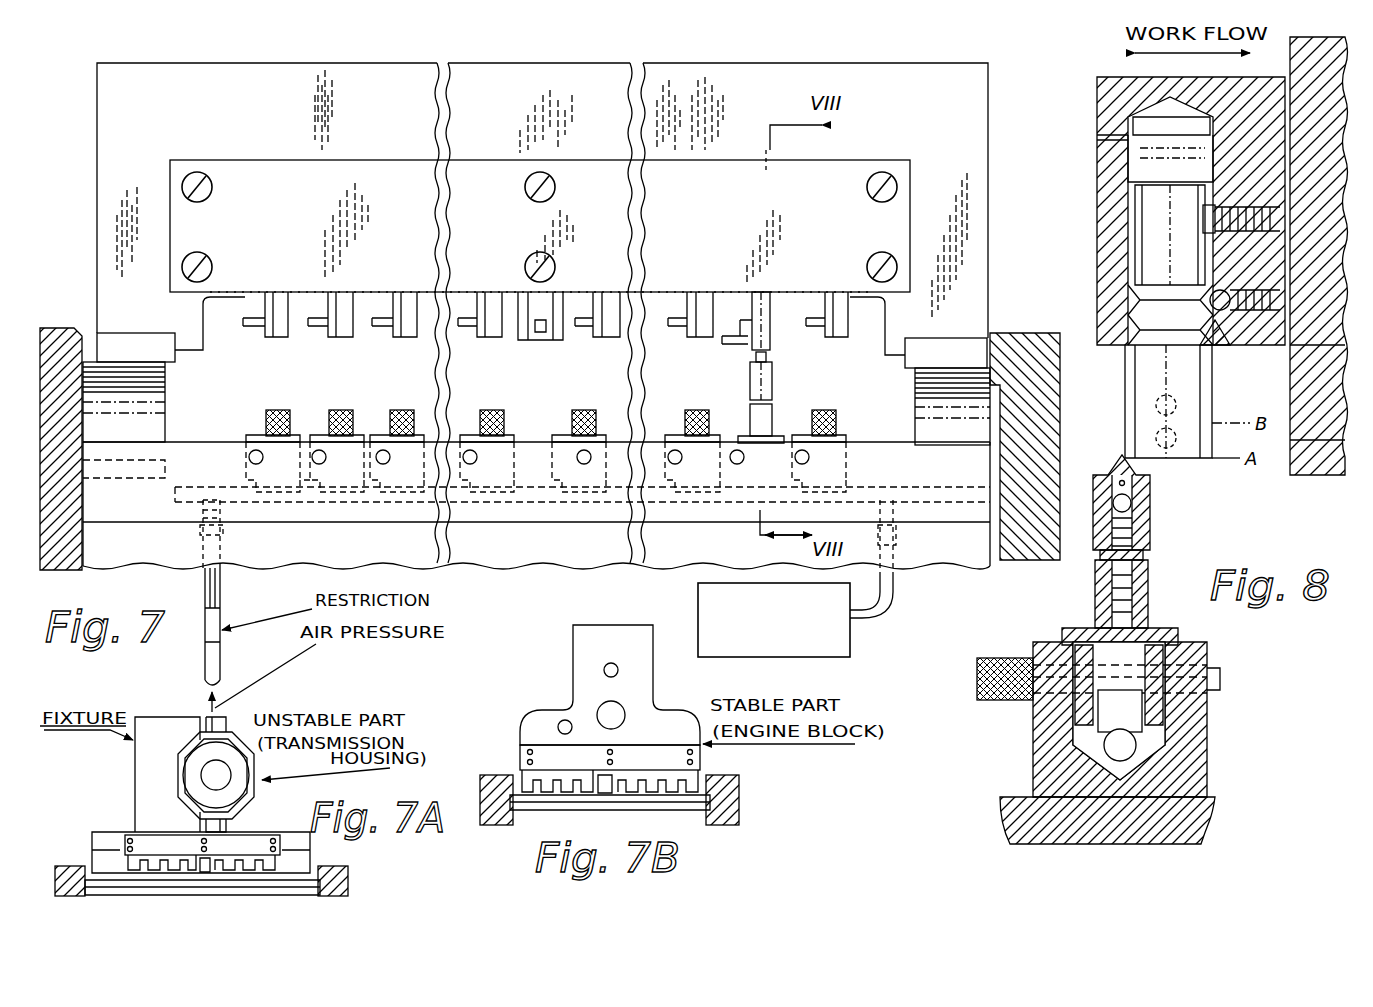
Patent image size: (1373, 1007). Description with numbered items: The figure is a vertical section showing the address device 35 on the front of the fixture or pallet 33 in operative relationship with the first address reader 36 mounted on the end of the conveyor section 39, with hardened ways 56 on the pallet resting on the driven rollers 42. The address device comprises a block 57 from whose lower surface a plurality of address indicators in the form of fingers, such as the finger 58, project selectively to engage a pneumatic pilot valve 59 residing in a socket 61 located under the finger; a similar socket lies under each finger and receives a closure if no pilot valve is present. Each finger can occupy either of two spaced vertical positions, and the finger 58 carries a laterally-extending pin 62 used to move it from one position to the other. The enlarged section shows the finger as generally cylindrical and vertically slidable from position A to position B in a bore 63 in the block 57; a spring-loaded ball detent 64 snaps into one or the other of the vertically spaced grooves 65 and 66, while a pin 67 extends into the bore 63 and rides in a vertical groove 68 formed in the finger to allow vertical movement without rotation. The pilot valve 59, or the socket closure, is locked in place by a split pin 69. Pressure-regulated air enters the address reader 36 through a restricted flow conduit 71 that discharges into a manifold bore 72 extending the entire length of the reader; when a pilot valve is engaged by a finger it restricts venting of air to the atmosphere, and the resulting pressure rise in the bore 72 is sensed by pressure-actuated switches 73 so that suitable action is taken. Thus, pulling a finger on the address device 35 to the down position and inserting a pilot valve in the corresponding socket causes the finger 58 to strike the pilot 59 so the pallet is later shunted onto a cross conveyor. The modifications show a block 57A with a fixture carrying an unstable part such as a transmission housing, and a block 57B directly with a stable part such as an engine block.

In FIG. 7, the fixture or pallet 33 is at (988, 152).
In FIG. 8, the fixture or pallet 33 is at (1290, 386).
In FIG. 7, the address device 35 is at (206, 166).
In FIG. 8, the address device 35 is at (1097, 203).
In FIG. 7, the first address reader 36 is at (148, 512).
In FIG. 8, the first address reader 36 is at (1207, 760).
In FIG. 7, the conveyor section 39 is at (1035, 566).
In FIG. 7, the driven rollers 42 is at (152, 408).
In FIG. 7, the hardened ways 56 is at (138, 345).
In FIG. 7, the block 57 is at (388, 166).
In FIG. 8, the block 57 is at (1097, 275).
In FIG. 7A, the block 57A is at (254, 842).
In FIG. 7B, the block 57B is at (520, 760).
In FIG. 7, the finger 58 is at (770, 340).
In FIG. 8, the finger 58 is at (1135, 370).
In FIG. 7, the pneumatic pilot valve 59 is at (750, 378).
In FIG. 8, the pneumatic pilot valve 59 is at (1150, 530).
In FIG. 7, the socket 61 is at (772, 430).
In FIG. 8, the socket 61 is at (1165, 628).
In FIG. 7, the laterally-extending pin 62 is at (725, 341).
In FIG. 8, the laterally-extending pin 62 is at (1168, 447).
In FIG. 8, the bore 63 is at (1128, 140).
In FIG. 8, the spring-loaded ball detent 64 is at (1230, 340).
In FIG. 8, the groove 65 is at (1128, 307).
In FIG. 8, the groove 66 is at (1128, 340).
In FIG. 8, the pin 67 is at (1203, 228).
In FIG. 8, the vertical groove 68 is at (1200, 258).
In FIG. 7, the split pin 69 is at (737, 462).
In FIG. 8, the split pin 69 is at (995, 658).
In FIG. 7, the restricted flow conduit 71 is at (221, 585).
In FIG. 7, the manifold bore 72 is at (215, 495).
In FIG. 8, the manifold bore 72 is at (1120, 730).
In FIG. 7, the pressure-actuated switches 73 is at (800, 657).